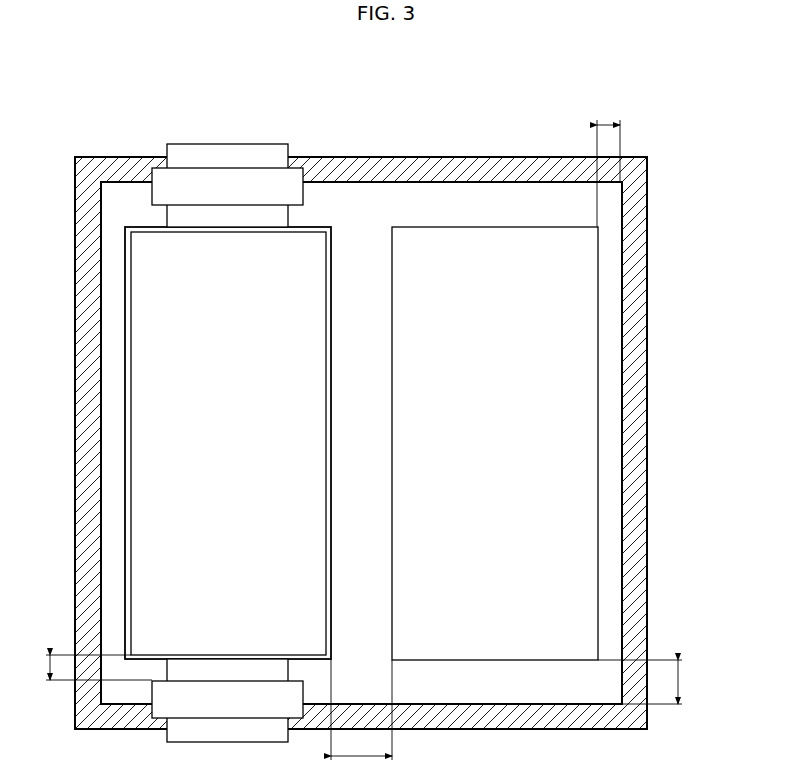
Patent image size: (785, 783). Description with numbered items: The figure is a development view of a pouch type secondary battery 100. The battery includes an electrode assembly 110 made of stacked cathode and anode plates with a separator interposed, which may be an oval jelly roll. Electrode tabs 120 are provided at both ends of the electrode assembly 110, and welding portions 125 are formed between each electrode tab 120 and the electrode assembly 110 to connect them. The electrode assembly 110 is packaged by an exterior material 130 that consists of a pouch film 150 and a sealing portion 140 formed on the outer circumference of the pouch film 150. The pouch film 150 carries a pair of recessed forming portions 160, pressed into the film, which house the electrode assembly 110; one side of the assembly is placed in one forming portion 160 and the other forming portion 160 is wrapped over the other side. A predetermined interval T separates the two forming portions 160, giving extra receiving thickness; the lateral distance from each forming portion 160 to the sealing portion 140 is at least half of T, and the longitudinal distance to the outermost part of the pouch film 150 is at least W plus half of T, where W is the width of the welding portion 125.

The secondary battery 100 is at (56, 66).
The electrode assembly 110 is at (363, 443).
The electrode tab 120 is at (230, 160).
The welding portion 125 is at (282, 217).
The exterior material 130 is at (415, 443).
The sealing portion 140 is at (643, 421).
The pouch film 150 is at (110, 548).
The forming portion 160 is at (125, 603).